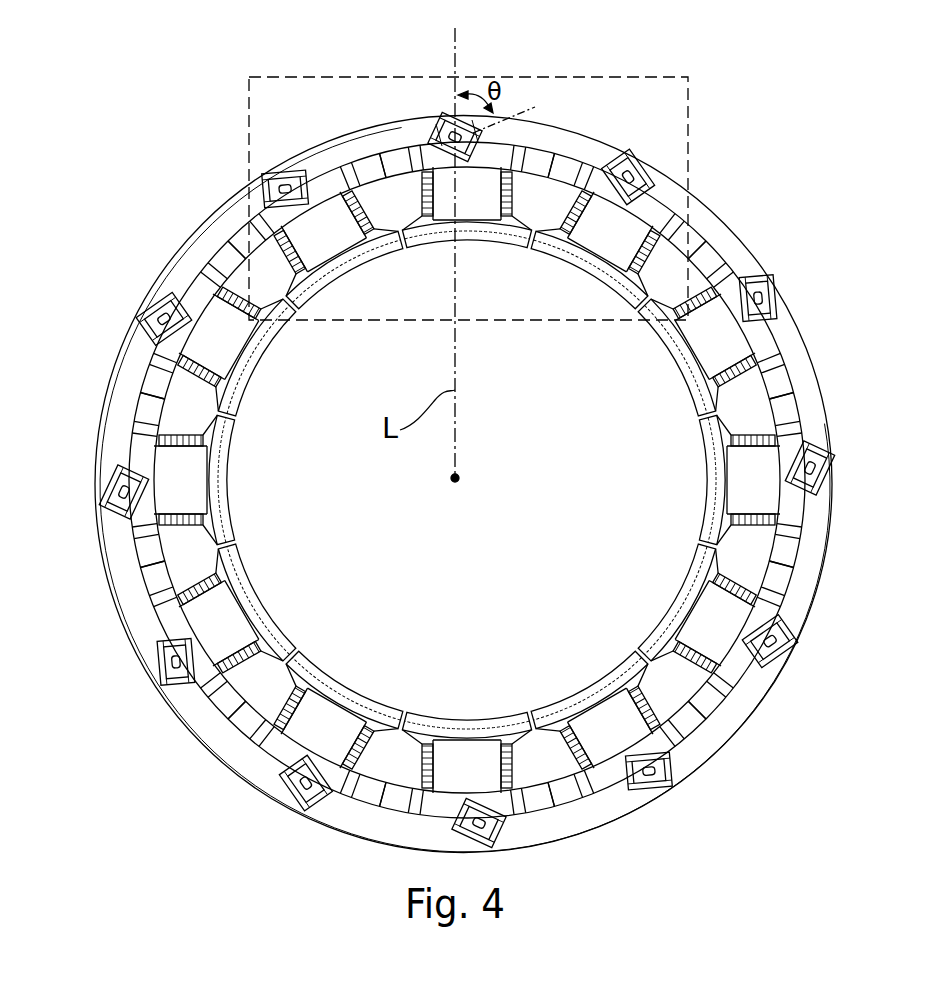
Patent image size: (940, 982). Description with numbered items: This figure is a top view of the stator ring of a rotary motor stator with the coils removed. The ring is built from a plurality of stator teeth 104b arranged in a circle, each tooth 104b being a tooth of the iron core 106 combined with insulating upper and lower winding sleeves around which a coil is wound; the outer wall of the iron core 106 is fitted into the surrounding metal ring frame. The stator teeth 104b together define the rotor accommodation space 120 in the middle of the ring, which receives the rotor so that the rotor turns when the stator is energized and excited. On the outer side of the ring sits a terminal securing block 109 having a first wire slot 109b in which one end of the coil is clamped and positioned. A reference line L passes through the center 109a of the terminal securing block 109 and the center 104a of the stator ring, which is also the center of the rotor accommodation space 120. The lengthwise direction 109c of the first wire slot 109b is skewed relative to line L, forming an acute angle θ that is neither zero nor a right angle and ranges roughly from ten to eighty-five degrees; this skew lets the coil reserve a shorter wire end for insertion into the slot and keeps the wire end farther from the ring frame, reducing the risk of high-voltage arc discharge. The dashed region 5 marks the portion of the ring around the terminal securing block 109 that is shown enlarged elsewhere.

The stator tooth region 5 is at (688, 113).
The center of the stator ring 104a is at (450, 484).
The stator tooth 104b is at (652, 372).
The iron core 106 is at (813, 382).
The terminal securing block 109 is at (437, 100).
The center of the terminal securing block 109a is at (437, 122).
The first wire slot 109b is at (490, 131).
The lengthwise direction of the first wire slot 109c is at (527, 110).
The rotor accommodation space 120 is at (488, 638).